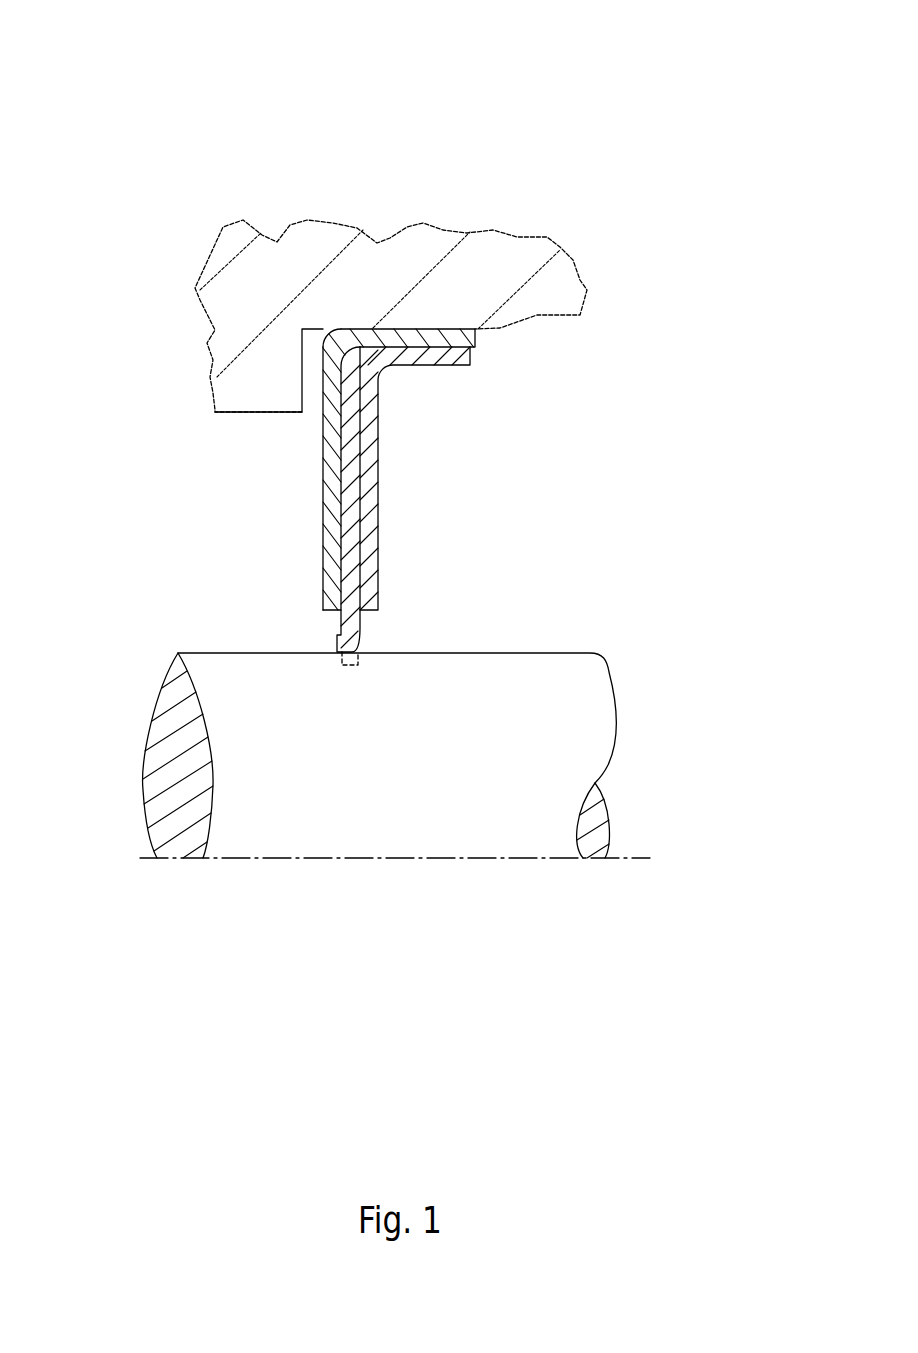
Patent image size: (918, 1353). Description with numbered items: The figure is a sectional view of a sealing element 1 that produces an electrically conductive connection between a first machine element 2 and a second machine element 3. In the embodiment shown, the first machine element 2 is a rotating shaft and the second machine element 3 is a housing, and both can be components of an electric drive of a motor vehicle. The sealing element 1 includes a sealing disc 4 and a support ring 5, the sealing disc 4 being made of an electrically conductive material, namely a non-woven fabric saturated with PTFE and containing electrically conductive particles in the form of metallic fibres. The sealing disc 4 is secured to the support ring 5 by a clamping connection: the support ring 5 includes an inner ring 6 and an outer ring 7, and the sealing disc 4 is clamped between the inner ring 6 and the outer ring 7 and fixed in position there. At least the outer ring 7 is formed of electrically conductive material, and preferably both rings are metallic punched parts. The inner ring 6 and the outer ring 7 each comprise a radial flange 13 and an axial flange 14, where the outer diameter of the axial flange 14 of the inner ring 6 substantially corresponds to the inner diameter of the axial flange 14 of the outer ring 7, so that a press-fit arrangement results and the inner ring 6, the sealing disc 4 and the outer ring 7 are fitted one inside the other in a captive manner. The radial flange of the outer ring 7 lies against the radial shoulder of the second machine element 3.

The sealing element 1 is at (390, 361).
The first machine element 2 is at (518, 727).
The second machine element 3 is at (478, 282).
The sealing disc 4 is at (347, 632).
The support ring 5 is at (211, 482).
The inner ring 6 is at (363, 556).
The outer ring 7 is at (327, 575).
The radial flange 13 is at (327, 457).
The axial flange 14 is at (413, 338).